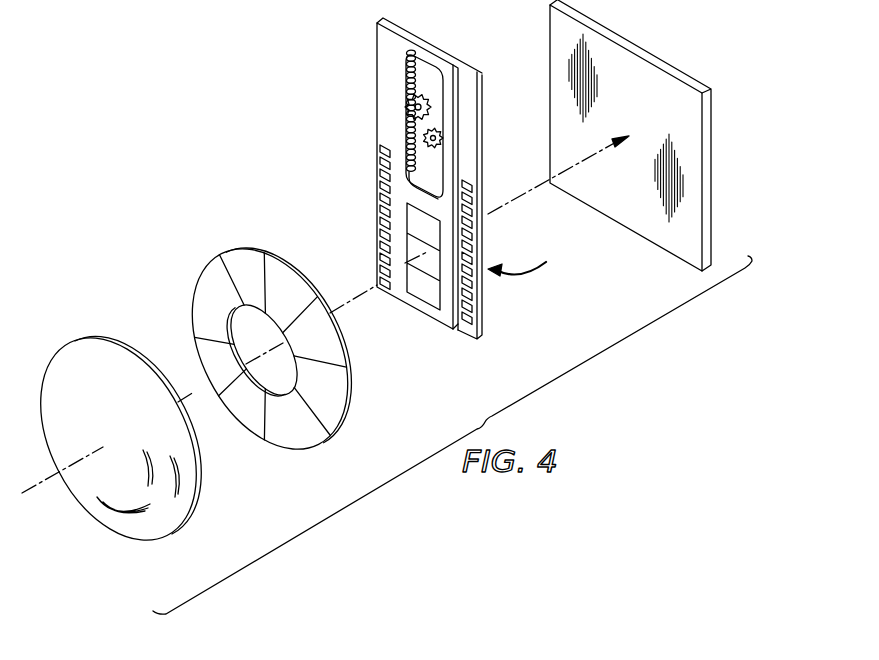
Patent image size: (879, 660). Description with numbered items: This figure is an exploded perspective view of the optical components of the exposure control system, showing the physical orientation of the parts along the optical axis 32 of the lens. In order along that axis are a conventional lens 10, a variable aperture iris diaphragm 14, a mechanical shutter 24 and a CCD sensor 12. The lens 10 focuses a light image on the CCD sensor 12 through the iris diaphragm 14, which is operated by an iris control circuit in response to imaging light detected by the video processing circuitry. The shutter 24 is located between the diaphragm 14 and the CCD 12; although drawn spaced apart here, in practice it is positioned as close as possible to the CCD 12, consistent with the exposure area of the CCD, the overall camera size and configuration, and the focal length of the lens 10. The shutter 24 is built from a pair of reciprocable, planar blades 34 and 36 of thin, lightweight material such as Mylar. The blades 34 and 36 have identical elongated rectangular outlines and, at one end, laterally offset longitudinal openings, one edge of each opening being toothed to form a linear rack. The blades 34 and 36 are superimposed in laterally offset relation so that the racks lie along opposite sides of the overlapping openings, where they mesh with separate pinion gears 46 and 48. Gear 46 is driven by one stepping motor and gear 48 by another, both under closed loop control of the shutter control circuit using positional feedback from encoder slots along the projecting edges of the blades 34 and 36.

The lens 10 is at (77, 357).
The CCD sensor 12 is at (631, 204).
The variable aperture iris diaphragm 14 is at (222, 271).
The mechanical shutter 24 is at (527, 260).
The optical axis 32 is at (190, 394).
The blade 34 is at (382, 40).
The blade 36 is at (471, 96).
The pinion gear 46 is at (431, 156).
The pinion gear 48 is at (408, 107).